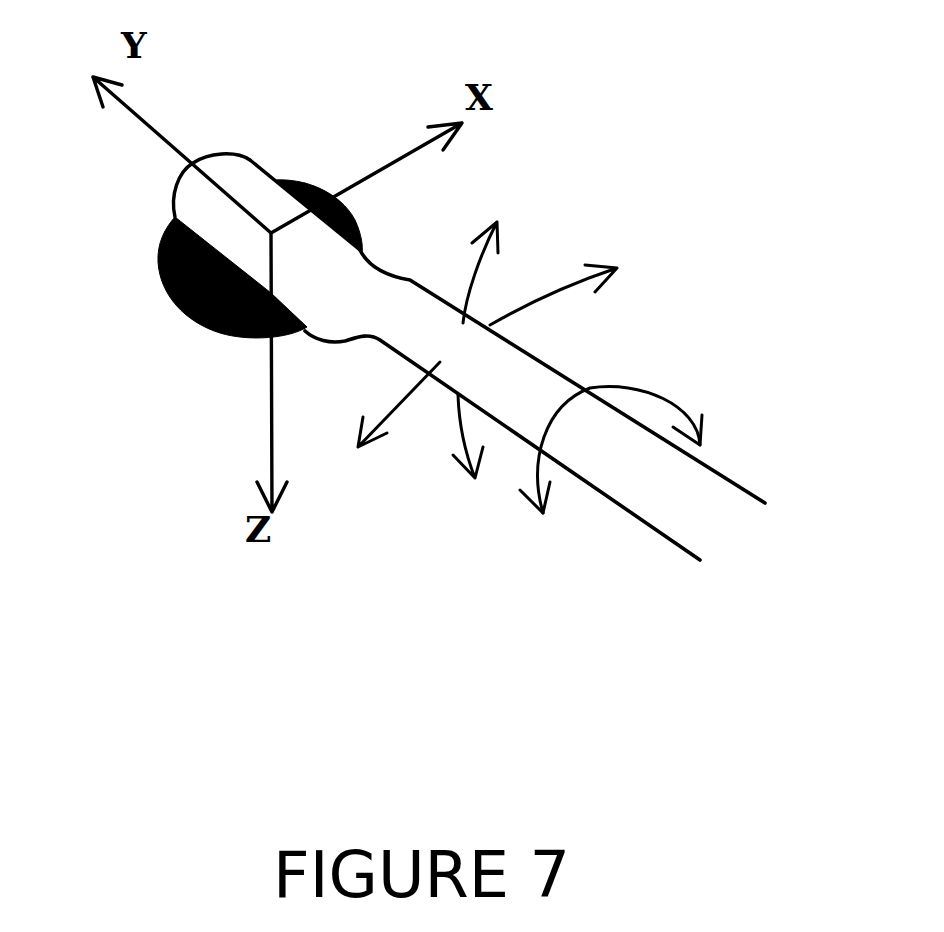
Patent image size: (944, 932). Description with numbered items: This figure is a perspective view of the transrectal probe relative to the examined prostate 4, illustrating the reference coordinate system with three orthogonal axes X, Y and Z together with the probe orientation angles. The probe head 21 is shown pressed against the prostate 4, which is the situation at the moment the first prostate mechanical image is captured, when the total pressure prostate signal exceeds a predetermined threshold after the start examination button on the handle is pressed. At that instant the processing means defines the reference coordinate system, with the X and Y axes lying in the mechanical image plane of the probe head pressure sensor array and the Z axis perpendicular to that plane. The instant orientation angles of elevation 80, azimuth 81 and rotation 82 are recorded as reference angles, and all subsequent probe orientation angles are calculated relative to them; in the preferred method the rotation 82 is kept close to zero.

The prostate 4 is at (160, 287).
The probe head 21 is at (226, 168).
The elevation 80 is at (478, 290).
The azimuth 81 is at (546, 295).
The rotation 82 is at (633, 386).